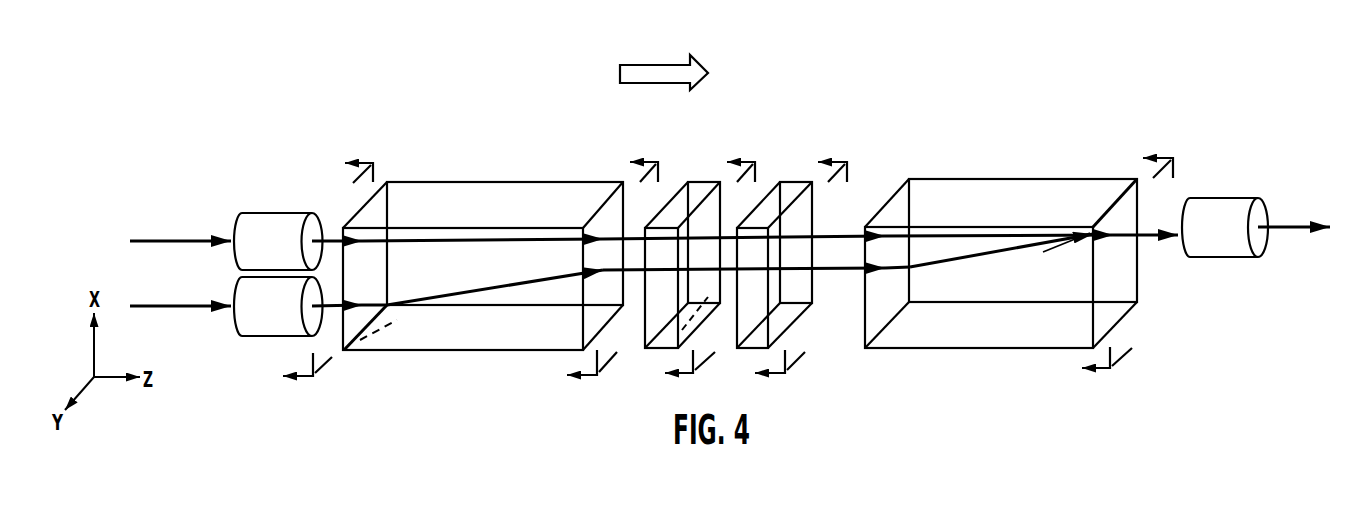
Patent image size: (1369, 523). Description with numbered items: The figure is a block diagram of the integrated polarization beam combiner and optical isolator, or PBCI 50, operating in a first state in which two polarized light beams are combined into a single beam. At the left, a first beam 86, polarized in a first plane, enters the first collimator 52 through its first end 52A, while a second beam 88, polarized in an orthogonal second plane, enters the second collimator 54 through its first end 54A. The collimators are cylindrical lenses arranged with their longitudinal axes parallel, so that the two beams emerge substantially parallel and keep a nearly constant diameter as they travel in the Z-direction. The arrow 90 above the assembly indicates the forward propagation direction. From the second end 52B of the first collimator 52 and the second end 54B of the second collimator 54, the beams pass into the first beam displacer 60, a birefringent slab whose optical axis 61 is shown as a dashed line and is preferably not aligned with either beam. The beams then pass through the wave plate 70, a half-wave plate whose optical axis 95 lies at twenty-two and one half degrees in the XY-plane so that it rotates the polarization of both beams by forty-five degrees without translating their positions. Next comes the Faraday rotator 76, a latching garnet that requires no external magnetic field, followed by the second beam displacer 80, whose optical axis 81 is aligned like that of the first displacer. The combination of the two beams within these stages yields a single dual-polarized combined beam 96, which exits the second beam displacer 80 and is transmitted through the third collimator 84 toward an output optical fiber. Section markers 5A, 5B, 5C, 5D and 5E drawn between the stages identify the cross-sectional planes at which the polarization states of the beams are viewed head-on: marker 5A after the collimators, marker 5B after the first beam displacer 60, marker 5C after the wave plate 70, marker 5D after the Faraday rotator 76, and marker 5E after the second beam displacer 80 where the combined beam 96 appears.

The PBCI 50 is at (274, 126).
The first collimator 52 is at (283, 253).
The first end of the first collimator 52A is at (234, 223).
The second end of the first collimator 52B is at (322, 229).
The second collimator 54 is at (283, 318).
The first end of the second collimator 54A is at (234, 326).
The second end of the second collimator 54B is at (322, 318).
The first beam displacer 60 is at (452, 198).
The optical axis of the first beam displacer 61 is at (379, 327).
The wave plate 70 is at (700, 190).
The Faraday rotator 76 is at (792, 190).
The second beam displacer 80 is at (965, 195).
The optical axis of the second beam displacer 81 is at (1043, 255).
The third collimator 84 is at (1230, 212).
The first beam 86 is at (517, 238).
The second beam 88 is at (480, 290).
The arrow 90 is at (653, 65).
The optical axis of the half-wave plate 95 is at (687, 324).
The combined beam 96 is at (1123, 230).
The section line 5A- 5A is at (328, 272).
The section line 5B- 5B is at (612, 270).
The section line 5C- 5C is at (708, 270).
The section line 5D- 5D is at (800, 270).
The section line 5E- 5E is at (1126, 267).